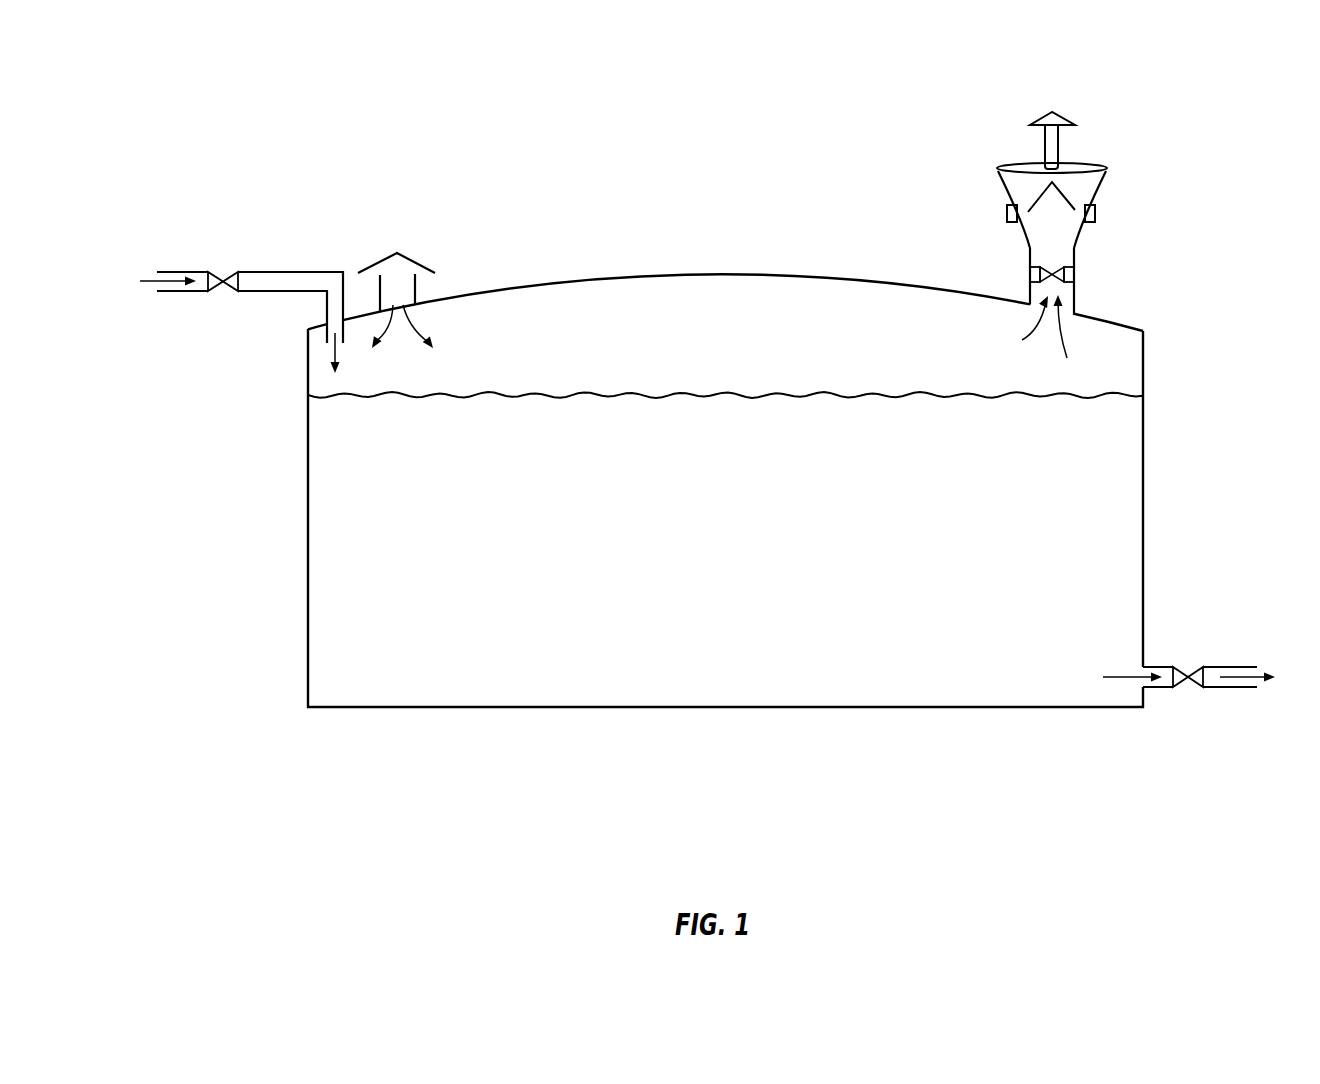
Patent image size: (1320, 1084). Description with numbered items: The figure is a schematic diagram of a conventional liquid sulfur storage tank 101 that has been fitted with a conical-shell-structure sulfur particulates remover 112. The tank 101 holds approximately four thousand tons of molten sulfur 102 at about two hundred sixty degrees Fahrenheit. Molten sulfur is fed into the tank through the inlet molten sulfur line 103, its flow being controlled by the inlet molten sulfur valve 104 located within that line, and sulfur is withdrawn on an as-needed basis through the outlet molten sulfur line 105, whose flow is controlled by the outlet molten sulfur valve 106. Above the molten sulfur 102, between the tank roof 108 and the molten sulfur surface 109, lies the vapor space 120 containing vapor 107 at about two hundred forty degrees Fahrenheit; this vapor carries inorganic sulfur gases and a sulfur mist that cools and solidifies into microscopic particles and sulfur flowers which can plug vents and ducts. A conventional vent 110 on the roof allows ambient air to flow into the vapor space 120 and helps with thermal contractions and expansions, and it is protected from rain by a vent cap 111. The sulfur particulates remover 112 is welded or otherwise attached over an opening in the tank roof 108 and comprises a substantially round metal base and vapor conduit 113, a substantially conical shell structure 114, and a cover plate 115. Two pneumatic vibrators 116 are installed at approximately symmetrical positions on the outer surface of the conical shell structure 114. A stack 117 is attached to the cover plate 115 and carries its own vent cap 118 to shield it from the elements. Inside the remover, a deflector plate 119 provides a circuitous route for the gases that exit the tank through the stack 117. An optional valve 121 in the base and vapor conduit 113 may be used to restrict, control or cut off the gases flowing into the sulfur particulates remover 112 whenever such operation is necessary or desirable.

The liquid sulfur storage tank 101 is at (306, 453).
The molten sulfur 102 is at (350, 625).
The inlet molten sulfur line 103 is at (175, 270).
The inlet molten sulfur valve 104 is at (220, 277).
The outlet molten sulfur line 105 is at (1235, 687).
The outlet molten sulfur valve 106 is at (1180, 667).
The vapor 107 is at (663, 310).
The tank roof 108 is at (717, 272).
The molten sulfur surface 109 is at (932, 395).
The conventional vent 110 is at (420, 290).
The vent cap 111 is at (385, 253).
The sulfur particulates remover 112 is at (1105, 168).
The metal base and vapor conduit 113 is at (1076, 290).
The conical shell structure 114 is at (1080, 233).
The cover plate 115 is at (1017, 162).
The pneumatic vibrators 116 is at (1007, 208).
The stack 117 is at (1043, 148).
The vent cap 118 is at (1060, 113).
The deflector plate 119 is at (1067, 197).
The vapor space 120 is at (588, 313).
The valve 121 is at (1038, 267).